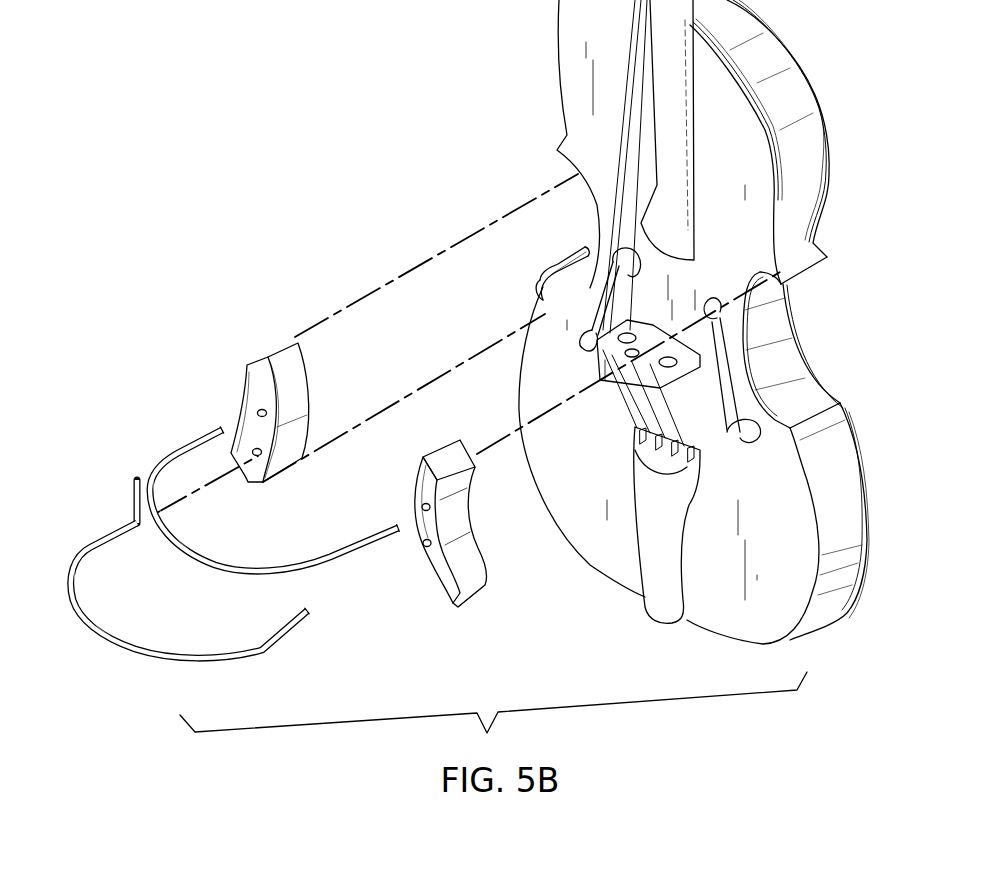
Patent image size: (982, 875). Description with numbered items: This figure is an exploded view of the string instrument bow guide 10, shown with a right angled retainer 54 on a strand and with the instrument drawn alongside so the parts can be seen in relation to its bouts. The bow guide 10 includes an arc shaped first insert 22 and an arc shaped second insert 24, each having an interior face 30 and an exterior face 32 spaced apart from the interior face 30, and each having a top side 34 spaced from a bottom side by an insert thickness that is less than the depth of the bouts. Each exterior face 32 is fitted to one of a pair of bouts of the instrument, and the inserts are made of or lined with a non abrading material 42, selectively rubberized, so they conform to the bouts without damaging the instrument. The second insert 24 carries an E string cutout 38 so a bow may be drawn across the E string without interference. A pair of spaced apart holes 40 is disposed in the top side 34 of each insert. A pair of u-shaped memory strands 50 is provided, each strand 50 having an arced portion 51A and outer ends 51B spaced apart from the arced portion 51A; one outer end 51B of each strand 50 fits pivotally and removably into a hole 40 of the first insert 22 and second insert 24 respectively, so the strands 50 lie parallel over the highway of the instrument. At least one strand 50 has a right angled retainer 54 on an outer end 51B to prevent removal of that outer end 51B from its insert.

The string instrument bow guide 10 is at (226, 348).
The first insert 22 is at (260, 356).
The second insert 24 is at (420, 488).
The interior face 30 is at (247, 417).
The exterior face 32 is at (272, 374).
The top side 34 is at (436, 481).
The E string cutout 38 is at (460, 520).
The holes 40 is at (260, 413).
The non abrading material 42 is at (300, 392).
The memory strand 50 is at (177, 460).
The arced portion 51A is at (173, 540).
The outer end 51B is at (398, 533).
The right angled retainer 54 is at (133, 480).